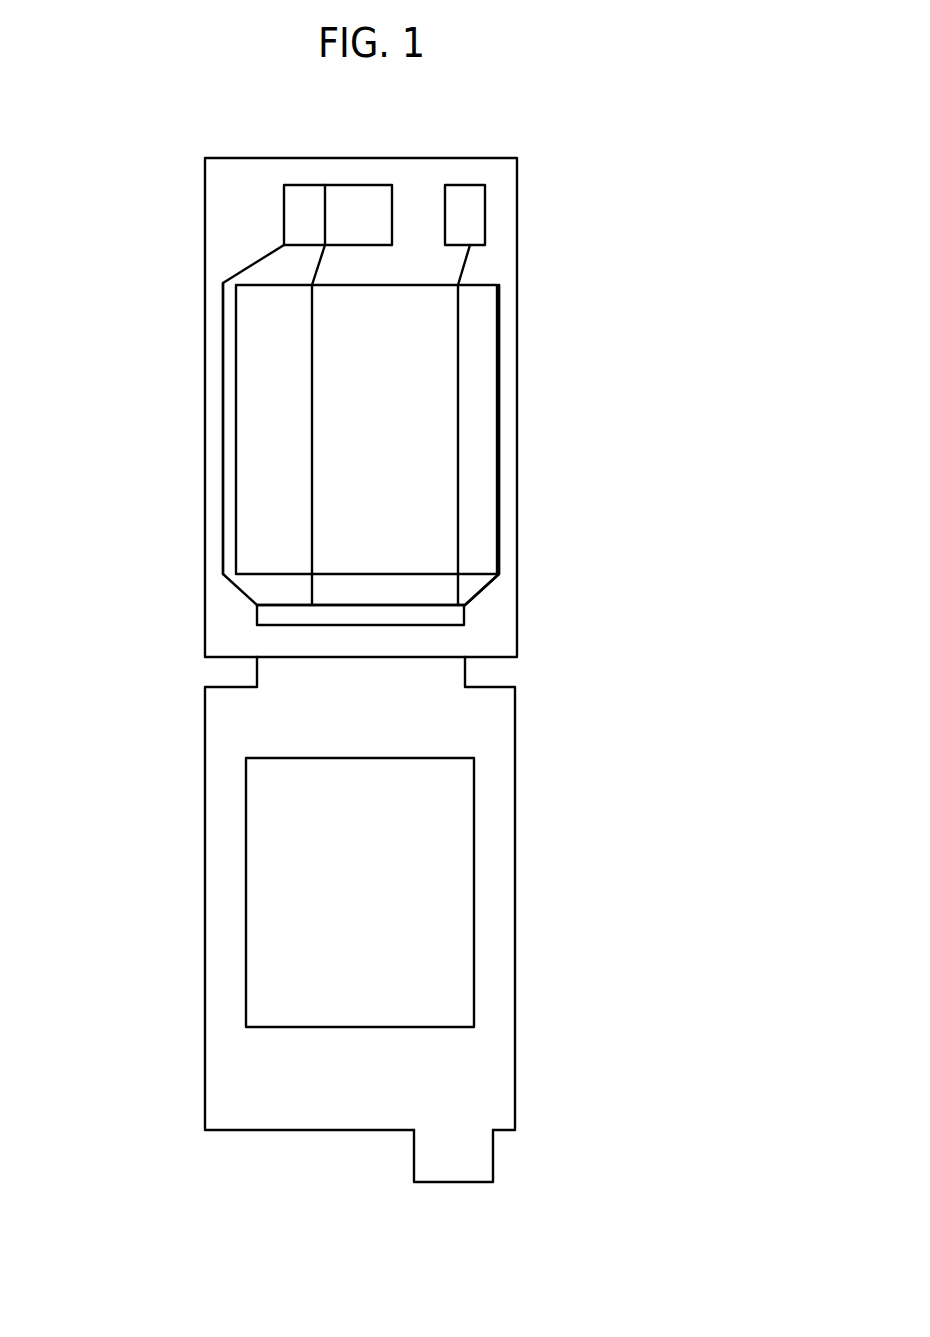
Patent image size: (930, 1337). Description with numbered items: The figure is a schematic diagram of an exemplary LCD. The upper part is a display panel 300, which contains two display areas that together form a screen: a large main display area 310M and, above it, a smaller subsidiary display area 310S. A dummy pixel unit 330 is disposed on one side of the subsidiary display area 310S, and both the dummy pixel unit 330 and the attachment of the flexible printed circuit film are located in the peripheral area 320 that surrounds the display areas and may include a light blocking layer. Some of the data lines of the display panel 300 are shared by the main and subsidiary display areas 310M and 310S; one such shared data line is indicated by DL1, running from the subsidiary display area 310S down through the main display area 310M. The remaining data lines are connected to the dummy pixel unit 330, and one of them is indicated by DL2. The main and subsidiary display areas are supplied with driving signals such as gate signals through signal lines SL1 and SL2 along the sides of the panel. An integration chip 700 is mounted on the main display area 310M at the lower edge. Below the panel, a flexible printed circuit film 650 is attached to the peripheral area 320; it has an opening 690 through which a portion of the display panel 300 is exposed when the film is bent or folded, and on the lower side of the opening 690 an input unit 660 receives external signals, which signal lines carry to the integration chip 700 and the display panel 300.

The display panel 300 is at (460, 158).
The subsidiary display area 310S is at (358, 185).
The main display area 310M is at (258, 393).
The peripheral area 320 is at (210, 450).
The dummy pixel unit 330 is at (485, 210).
The shared data line DL1 is at (312, 335).
The remaining data line DL2 is at (458, 338).
The signal line SL1 is at (483, 590).
The signal line SL2 is at (223, 512).
The integration chip 700 is at (464, 615).
The flexible printed circuit film 650 is at (517, 720).
The opening 690 is at (474, 842).
The input unit 660 is at (480, 1153).